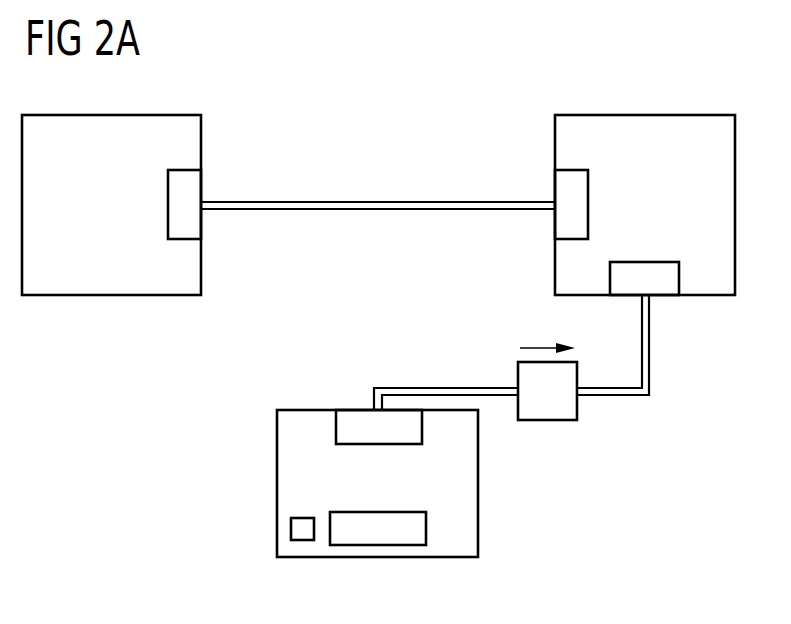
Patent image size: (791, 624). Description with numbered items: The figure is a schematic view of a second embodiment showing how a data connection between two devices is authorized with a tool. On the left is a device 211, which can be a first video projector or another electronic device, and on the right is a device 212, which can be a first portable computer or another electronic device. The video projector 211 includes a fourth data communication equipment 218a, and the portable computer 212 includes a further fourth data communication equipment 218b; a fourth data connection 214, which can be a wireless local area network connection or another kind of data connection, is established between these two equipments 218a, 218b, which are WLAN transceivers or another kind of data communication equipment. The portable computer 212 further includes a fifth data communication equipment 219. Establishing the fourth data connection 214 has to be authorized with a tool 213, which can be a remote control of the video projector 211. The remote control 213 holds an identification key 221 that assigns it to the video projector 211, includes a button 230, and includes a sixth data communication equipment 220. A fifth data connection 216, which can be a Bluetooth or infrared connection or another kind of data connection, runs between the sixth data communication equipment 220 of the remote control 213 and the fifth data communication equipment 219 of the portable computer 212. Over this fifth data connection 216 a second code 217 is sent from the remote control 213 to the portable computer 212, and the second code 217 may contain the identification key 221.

The device (first video projector) 211 is at (112, 295).
The device (first portable computer) 212 is at (645, 115).
The tool (remote control) 213 is at (378, 557).
The fourth data connection 214 is at (378, 201).
The fifth data connection 216 is at (651, 344).
The second code 217 is at (555, 425).
The fourth data communication equipment 218a is at (178, 204).
The further fourth data communication equipment 218b is at (578, 182).
The fifth data communication equipment 219 is at (645, 271).
The sixth data communication equipment 220 is at (355, 419).
The identification key 221 is at (378, 523).
The button 230 is at (302, 525).